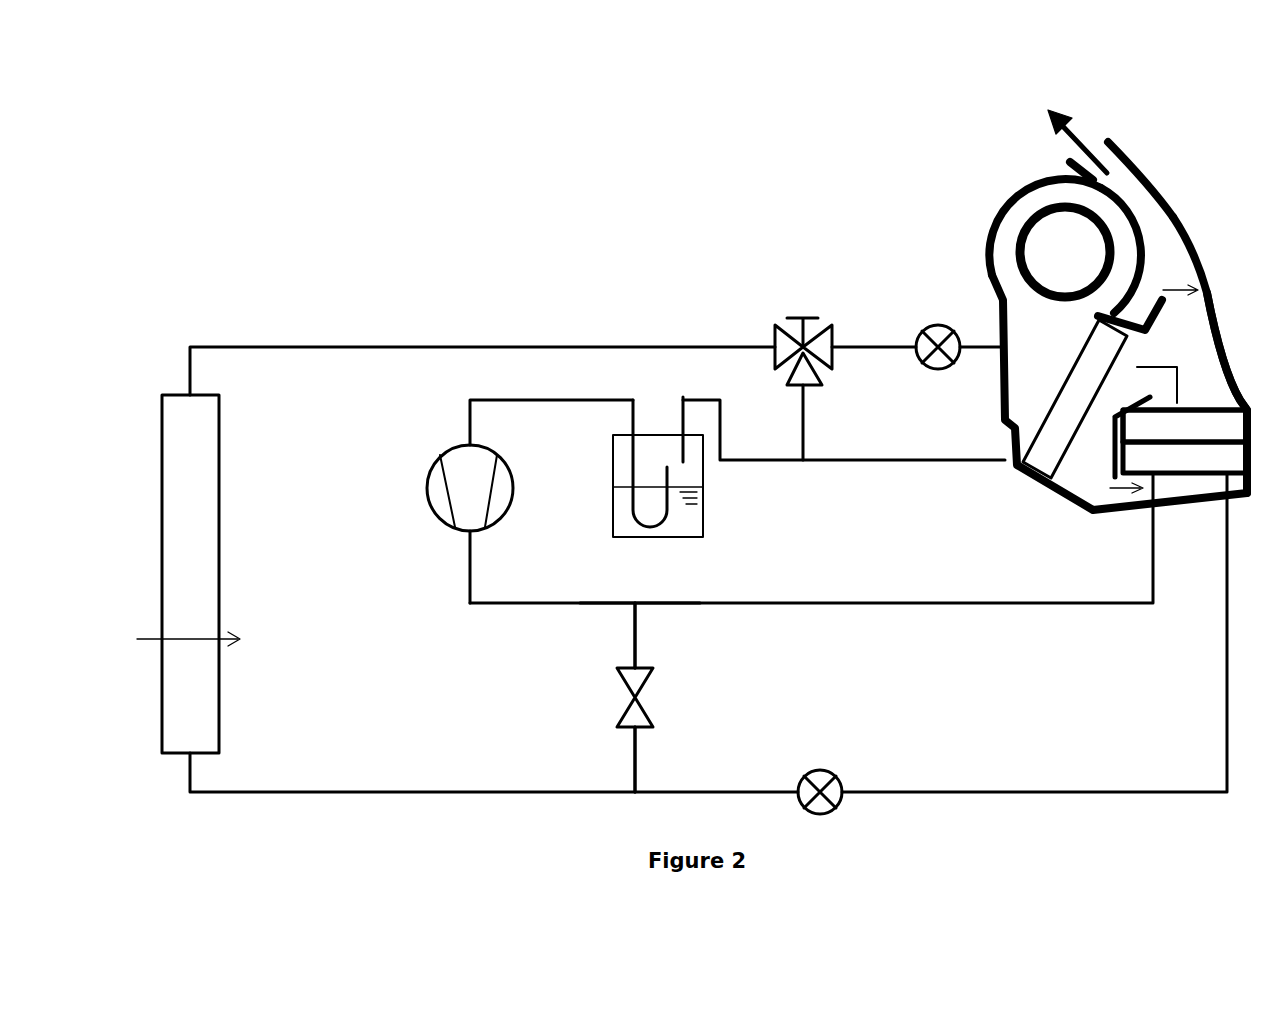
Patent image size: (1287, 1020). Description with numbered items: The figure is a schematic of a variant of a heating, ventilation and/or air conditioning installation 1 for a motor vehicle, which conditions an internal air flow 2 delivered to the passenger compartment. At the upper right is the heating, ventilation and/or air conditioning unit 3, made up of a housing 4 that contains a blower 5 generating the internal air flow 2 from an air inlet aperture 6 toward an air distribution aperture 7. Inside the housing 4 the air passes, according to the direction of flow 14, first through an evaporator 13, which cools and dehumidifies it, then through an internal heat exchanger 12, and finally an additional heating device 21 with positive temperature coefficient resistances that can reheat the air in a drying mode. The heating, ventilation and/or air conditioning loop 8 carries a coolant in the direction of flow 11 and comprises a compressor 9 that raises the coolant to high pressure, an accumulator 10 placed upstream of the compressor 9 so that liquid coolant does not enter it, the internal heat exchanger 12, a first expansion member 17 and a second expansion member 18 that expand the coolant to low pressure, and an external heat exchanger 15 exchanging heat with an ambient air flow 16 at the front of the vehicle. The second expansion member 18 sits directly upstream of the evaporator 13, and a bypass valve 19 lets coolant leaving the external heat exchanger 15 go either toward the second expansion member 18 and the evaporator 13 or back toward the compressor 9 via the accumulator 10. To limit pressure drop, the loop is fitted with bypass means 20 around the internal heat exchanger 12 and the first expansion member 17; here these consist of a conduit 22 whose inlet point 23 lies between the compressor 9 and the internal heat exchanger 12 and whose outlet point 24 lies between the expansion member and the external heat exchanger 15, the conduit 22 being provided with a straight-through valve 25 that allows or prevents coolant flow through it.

The heating, ventilation and/or air conditioning installation 1 is at (630, 242).
The internal air flow 2 is at (1080, 120).
The heating, ventilation and/or air conditioning unit 3 is at (1160, 175).
The housing 4 is at (1200, 260).
The blower 5 is at (1118, 344).
The air inlet aperture 6 is at (1065, 252).
The air distribution aperture 7 is at (1068, 160).
The heating, ventilation and/or air conditioning loop 8 is at (402, 318).
The compressor 9 is at (427, 488).
The accumulator 10 is at (703, 497).
The direction of flow 11 is at (280, 330).
The internal heat exchanger 12 is at (1178, 430).
The evaporator 13 is at (1075, 399).
The direction of flow 14 is at (1088, 448).
The external heat exchanger 15 is at (190, 574).
The ambient air flow 16 is at (243, 634).
The first expansion member 17 is at (820, 770).
The second expansion member 18 is at (938, 324).
The bypass valve 19 is at (803, 316).
The bypass means 20 is at (615, 643).
The additional heating device 21 is at (1185, 426).
The conduit 22 is at (640, 640).
The inlet point 23 is at (638, 603).
The outlet point 24 is at (637, 790).
The straight-through valve 25 is at (625, 690).